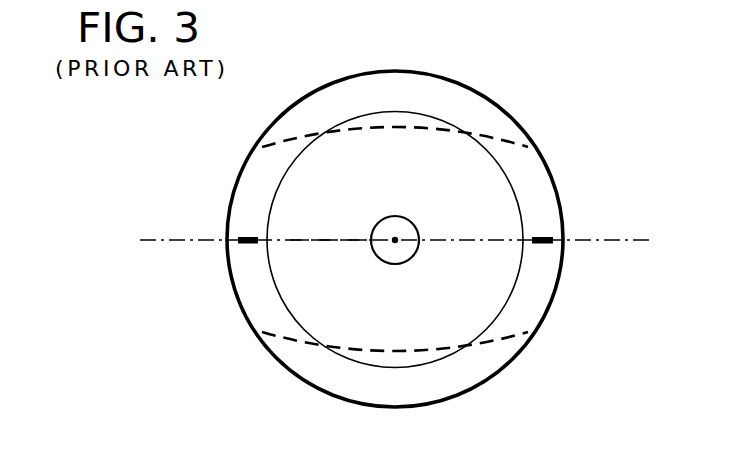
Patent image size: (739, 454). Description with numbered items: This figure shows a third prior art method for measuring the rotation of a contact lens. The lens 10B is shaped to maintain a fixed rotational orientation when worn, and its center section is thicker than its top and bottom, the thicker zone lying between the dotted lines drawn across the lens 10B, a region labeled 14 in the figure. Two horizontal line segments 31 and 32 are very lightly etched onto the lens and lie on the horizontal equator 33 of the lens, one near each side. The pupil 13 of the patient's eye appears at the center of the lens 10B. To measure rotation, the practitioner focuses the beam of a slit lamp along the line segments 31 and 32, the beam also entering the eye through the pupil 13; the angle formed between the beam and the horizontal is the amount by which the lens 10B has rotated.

The lens 10B is at (513, 115).
The eddy current probe coil / sensing region 14 is at (428, 113).
The pupil 13 is at (411, 218).
The horizontal equator 33 is at (312, 239).
The horizontal line segment 31 is at (240, 237).
The horizontal line segment 32 is at (549, 232).